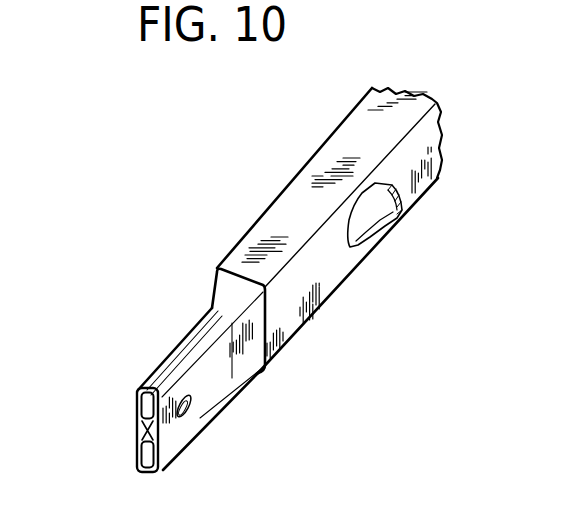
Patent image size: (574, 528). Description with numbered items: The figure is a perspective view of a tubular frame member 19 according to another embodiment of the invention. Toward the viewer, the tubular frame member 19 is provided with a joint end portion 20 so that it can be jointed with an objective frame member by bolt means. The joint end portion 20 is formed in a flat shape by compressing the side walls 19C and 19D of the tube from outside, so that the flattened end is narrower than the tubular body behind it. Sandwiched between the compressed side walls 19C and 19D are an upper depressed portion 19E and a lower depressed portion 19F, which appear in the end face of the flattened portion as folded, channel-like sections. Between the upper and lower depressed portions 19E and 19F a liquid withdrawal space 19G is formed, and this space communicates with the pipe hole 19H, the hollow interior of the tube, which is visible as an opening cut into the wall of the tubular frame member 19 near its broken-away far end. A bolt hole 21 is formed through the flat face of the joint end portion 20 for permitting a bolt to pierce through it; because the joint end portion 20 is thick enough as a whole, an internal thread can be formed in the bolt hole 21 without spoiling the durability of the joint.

The tubular frame member 19 is at (327, 280).
The pipe hole 19H is at (378, 203).
The joint end portion 20 is at (218, 387).
The bolt hole 21 is at (192, 405).
The side wall 19D is at (170, 445).
The depressed portion 19E is at (142, 408).
The liquid withdrawal space 19G is at (143, 433).
The side wall 19C is at (137, 453).
The depressed portion 19F is at (143, 458).